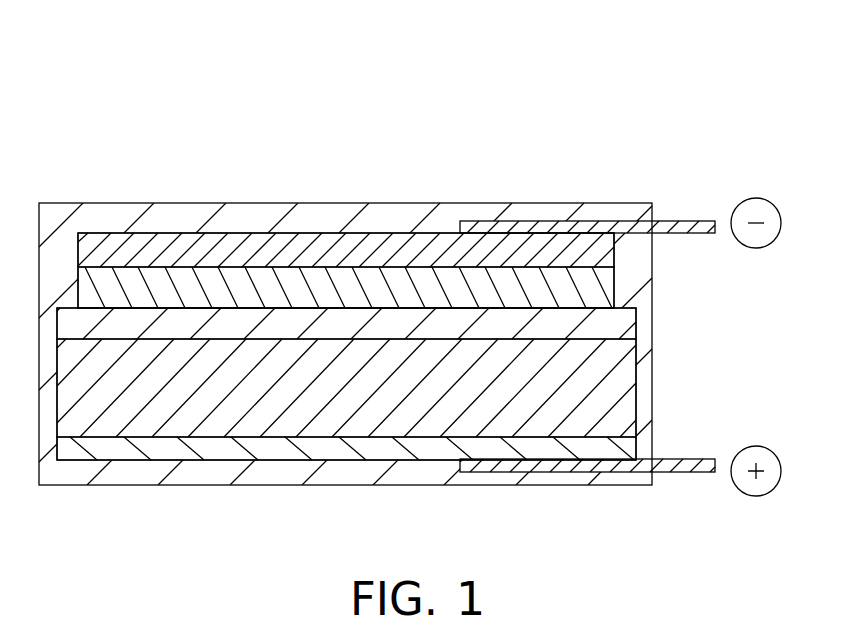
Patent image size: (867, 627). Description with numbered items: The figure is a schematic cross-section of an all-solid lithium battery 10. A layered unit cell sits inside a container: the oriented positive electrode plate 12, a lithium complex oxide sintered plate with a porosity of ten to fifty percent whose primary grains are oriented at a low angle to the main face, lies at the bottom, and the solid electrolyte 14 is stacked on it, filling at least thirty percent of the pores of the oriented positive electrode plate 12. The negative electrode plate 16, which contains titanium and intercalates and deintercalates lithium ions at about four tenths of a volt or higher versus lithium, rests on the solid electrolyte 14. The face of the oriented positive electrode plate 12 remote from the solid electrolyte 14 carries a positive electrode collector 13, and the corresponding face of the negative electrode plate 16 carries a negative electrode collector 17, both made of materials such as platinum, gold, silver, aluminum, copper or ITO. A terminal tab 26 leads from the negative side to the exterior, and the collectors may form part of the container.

The all-solid lithium battery 10 is at (528, 137).
The oriented positive electrode plate 12 is at (617, 390).
The positive electrode collector 13 is at (620, 448).
The solid electrolyte 14 is at (633, 325).
The negative electrode plate 16 is at (607, 283).
The negative electrode collector 17 is at (603, 247).
The negative electrode terminal tab 26 is at (605, 211).